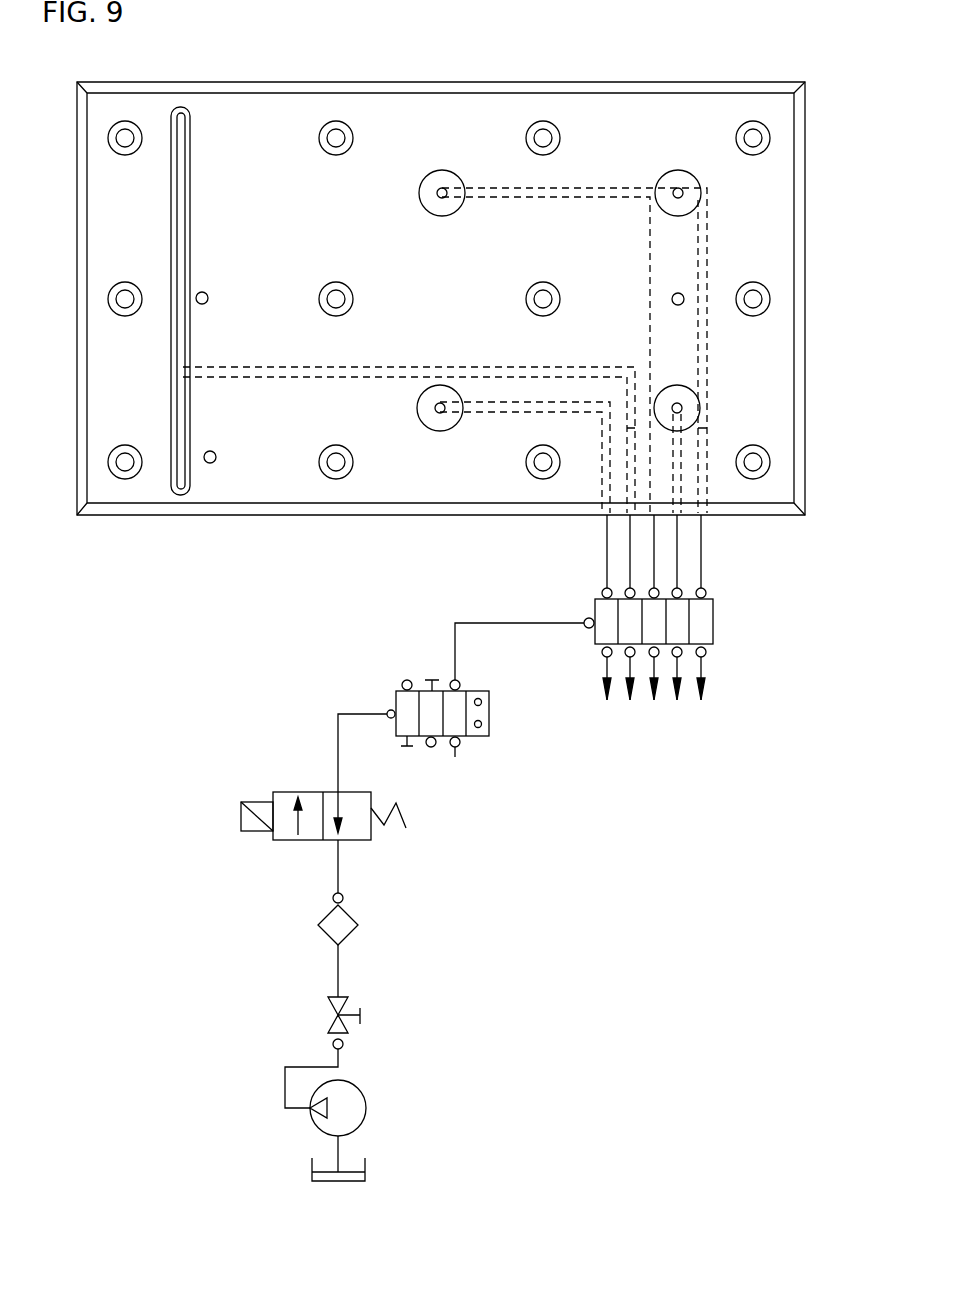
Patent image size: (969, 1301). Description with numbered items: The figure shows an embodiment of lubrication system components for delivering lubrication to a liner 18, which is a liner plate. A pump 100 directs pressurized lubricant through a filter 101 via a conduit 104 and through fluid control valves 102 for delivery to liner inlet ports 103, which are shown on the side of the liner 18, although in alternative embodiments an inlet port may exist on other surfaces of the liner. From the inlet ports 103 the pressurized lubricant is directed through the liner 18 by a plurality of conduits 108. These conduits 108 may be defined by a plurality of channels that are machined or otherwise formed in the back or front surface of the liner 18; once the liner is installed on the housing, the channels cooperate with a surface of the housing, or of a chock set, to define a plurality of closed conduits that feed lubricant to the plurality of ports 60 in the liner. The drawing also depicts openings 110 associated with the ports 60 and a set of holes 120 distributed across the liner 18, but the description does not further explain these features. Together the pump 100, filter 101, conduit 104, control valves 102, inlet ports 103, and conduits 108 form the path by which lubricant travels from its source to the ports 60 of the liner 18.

The liner 18 is at (784, 210).
The ports 60 is at (442, 193).
The pump 100 is at (366, 1108).
The filter 101 is at (353, 917).
The fluid control valves 102 is at (240, 815).
The liner inlet ports 103 is at (630, 516).
The conduit 104 is at (700, 568).
The conduits 108 is at (183, 113).
The port opening 110 is at (700, 178).
The mounting hole 120 is at (340, 124).